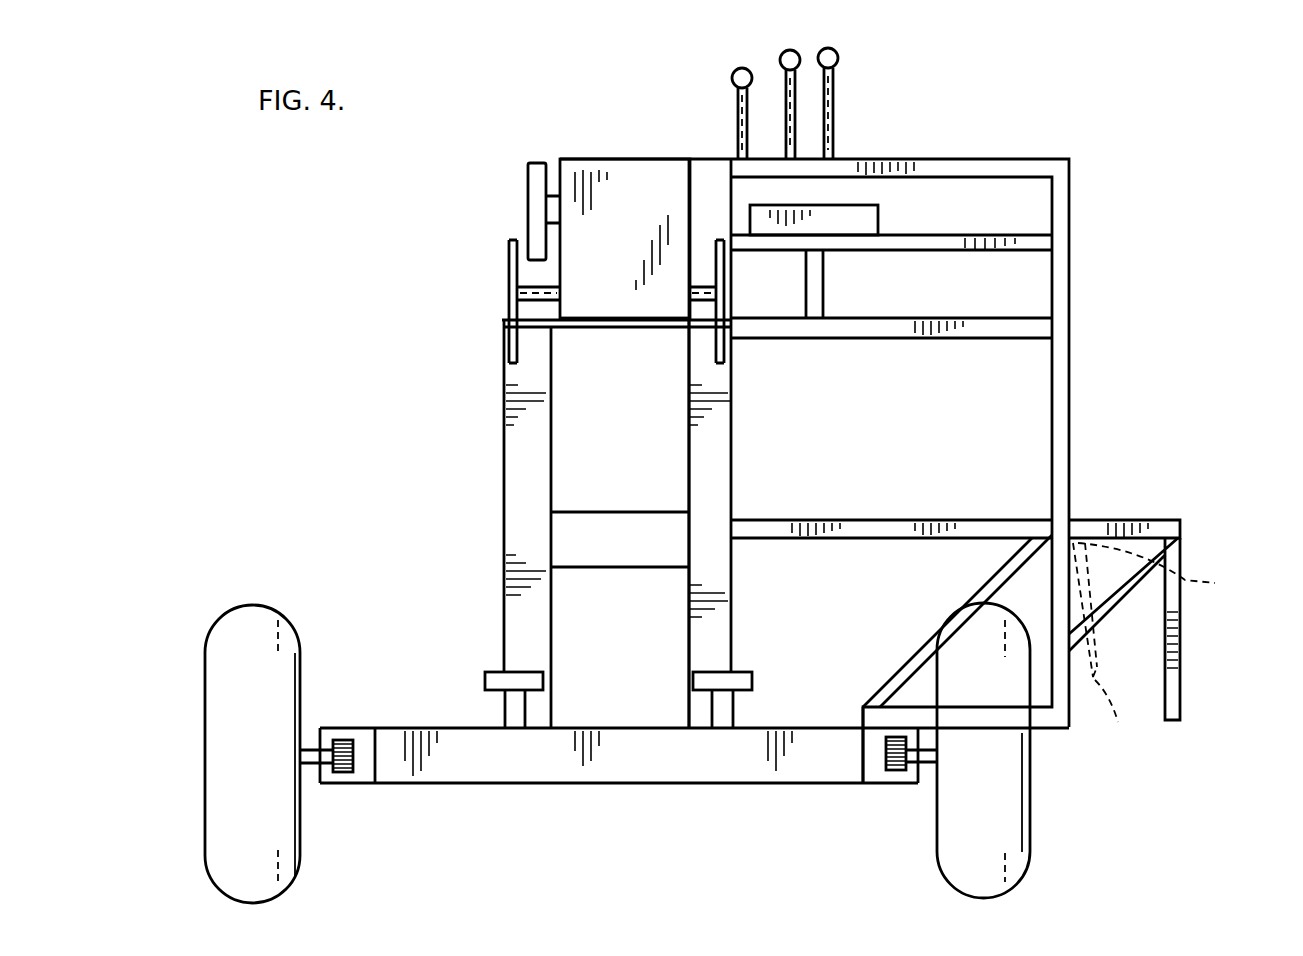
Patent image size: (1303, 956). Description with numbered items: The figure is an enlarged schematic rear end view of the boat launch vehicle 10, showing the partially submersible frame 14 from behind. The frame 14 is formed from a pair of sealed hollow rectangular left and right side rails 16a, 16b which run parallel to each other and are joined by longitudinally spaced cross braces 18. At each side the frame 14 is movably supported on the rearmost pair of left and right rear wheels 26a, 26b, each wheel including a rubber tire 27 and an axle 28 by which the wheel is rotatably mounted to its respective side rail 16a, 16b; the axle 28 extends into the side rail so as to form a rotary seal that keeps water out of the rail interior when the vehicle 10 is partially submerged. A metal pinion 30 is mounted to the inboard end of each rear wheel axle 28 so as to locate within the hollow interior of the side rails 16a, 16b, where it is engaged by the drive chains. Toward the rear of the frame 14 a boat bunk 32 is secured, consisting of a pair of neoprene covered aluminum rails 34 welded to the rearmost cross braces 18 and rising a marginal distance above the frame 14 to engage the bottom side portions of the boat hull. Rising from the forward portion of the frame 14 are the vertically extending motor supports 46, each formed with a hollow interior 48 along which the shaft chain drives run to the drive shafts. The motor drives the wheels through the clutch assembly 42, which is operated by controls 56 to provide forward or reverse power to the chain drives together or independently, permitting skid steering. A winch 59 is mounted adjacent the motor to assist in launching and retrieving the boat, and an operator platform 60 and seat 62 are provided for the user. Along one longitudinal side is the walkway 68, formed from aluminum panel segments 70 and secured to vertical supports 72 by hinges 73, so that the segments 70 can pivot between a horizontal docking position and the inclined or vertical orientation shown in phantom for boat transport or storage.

The launch vehicle 10 is at (1082, 128).
The frame 14 is at (694, 755).
The left side rail 16a is at (365, 727).
The right side rail 16b is at (870, 785).
The cross braces 18 is at (635, 771).
The left rear wheel 26a is at (260, 620).
The right rear wheel 26b is at (1013, 795).
The rubber tire 27 is at (264, 747).
The axle 28 is at (305, 766).
The pinion 30 is at (345, 787).
The boat bunk 32 is at (684, 670).
The bunk rails 34 is at (484, 680).
The clutch assembly 42 is at (632, 248).
The motor supports 46 is at (693, 363).
The hollow interior 48 is at (540, 468).
The controls 56 is at (747, 107).
The winch 59 is at (533, 192).
The operator platform 60 is at (853, 525).
The seat 62 is at (880, 224).
The walkway 68 is at (1112, 512).
The panel segments 70 is at (1150, 520).
The vertical supports 72 is at (1058, 600).
The hinges 73 is at (1175, 569).